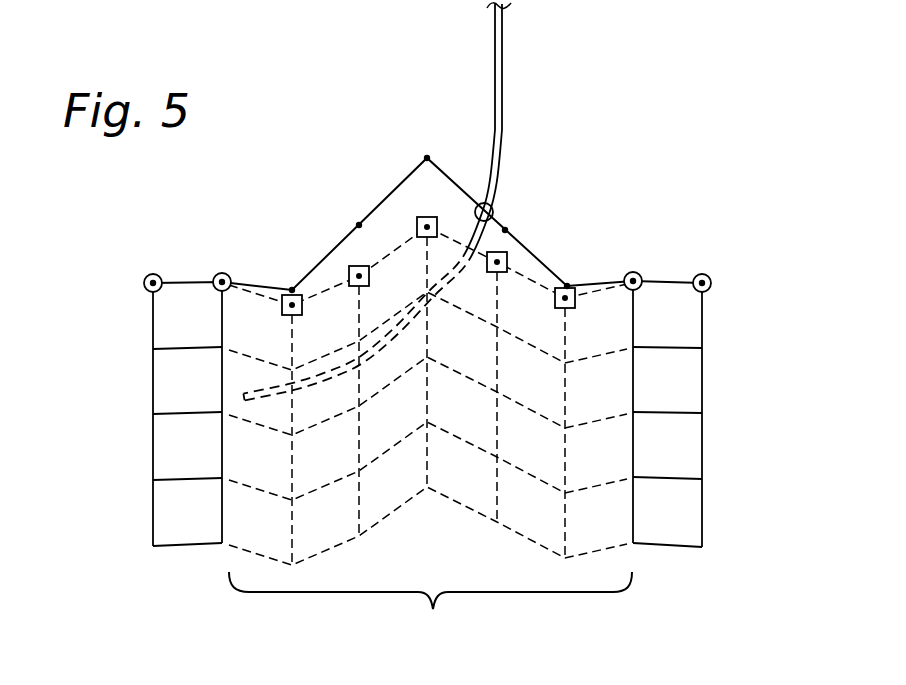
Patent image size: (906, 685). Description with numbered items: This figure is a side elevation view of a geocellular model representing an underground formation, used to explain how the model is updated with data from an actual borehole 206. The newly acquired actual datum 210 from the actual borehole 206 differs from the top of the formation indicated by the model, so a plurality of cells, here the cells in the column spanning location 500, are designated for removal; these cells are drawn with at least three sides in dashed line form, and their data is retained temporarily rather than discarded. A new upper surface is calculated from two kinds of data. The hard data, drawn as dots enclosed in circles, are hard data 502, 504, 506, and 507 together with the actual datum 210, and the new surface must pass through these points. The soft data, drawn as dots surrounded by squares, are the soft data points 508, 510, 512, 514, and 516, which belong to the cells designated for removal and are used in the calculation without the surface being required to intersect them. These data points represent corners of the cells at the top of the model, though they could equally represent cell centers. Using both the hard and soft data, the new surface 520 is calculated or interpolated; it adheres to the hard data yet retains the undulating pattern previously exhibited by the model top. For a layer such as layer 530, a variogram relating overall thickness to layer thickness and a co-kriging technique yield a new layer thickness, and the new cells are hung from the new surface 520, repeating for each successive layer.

The location 500 is at (430, 437).
The hard data 502 is at (153, 274).
The hard data 504 is at (222, 273).
The hard data 506 is at (633, 272).
The hard data 507 is at (703, 274).
The soft data point 508 is at (298, 284).
The soft data point 510 is at (354, 264).
The soft data point 512 is at (436, 218).
The soft data point 514 is at (510, 256).
The soft data point 516 is at (572, 285).
The new surface 520 is at (400, 185).
The layer 530 is at (120, 366).
The actual borehole 206 is at (502, 66).
The actual datum 210 is at (492, 208).